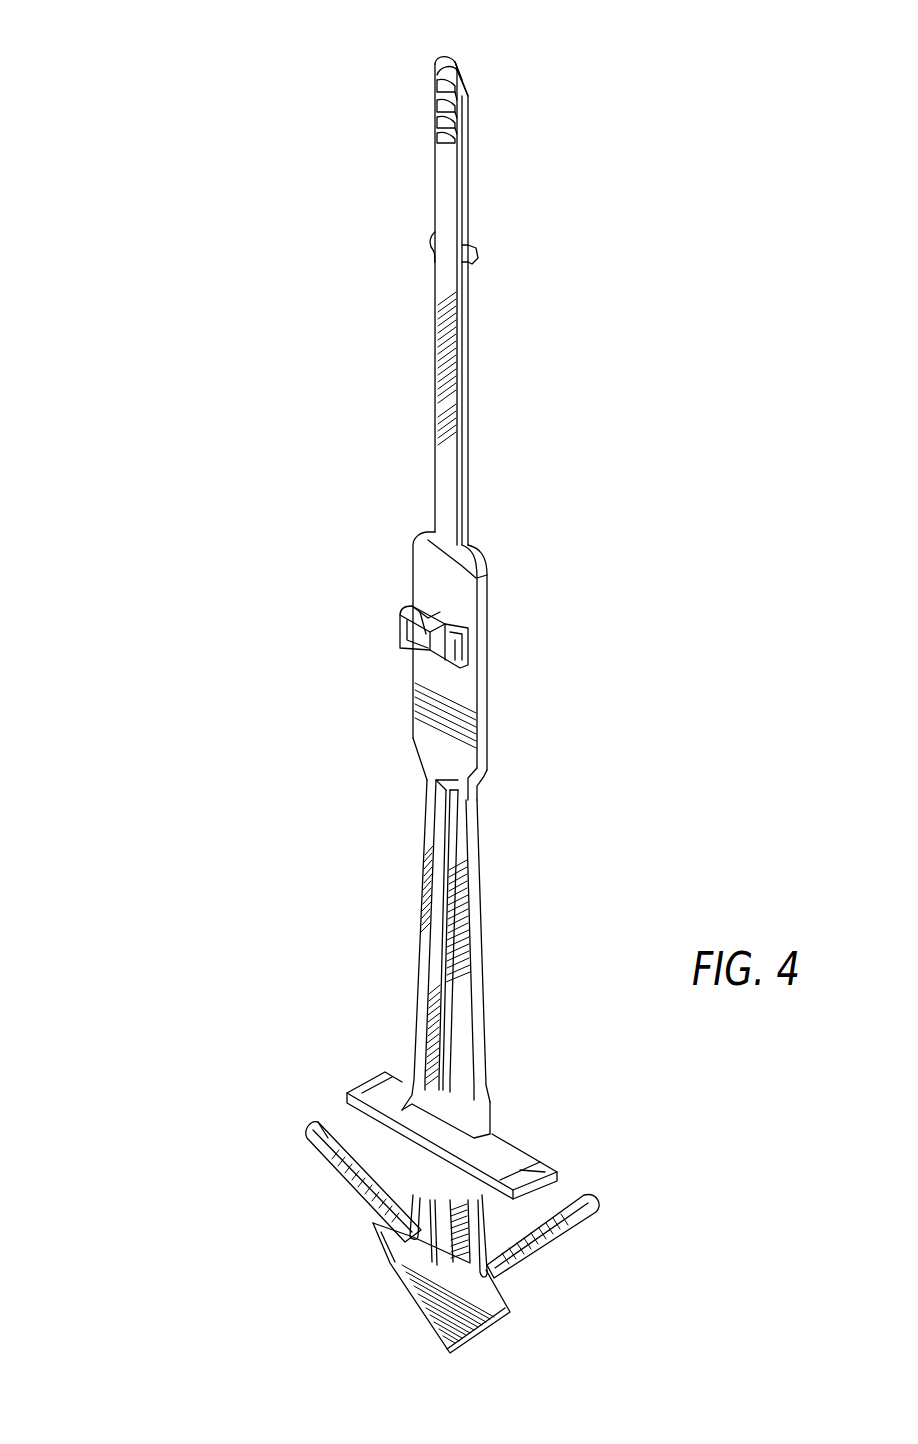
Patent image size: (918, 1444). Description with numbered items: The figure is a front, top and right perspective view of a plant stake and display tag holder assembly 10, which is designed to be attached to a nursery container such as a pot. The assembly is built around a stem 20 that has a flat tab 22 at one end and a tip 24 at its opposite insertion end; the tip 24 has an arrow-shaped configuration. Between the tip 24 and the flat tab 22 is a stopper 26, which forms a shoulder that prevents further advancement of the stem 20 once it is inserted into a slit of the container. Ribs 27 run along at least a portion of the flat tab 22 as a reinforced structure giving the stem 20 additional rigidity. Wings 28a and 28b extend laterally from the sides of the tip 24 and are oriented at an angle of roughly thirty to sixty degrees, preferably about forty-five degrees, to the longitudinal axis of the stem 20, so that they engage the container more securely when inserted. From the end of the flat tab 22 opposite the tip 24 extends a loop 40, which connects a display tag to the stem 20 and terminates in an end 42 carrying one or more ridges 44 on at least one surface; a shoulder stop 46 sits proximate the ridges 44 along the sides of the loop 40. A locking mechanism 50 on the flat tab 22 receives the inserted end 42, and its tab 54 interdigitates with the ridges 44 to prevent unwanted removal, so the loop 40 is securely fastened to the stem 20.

The plant stake and display tag holder assembly 10 is at (255, 519).
The stem 20 is at (392, 861).
The flat tab 22 is at (437, 727).
The tip 24 is at (447, 1353).
The stopper 26 is at (527, 1160).
The ribs 27 is at (437, 957).
The wing 28a is at (343, 1177).
The wing 28b is at (563, 1253).
The loop 40 is at (440, 415).
The end 42 is at (453, 56).
The ridges 44 is at (437, 80).
The shoulder stop 46 is at (477, 260).
The locking mechanism 50 is at (467, 654).
The tab 54 is at (435, 630).